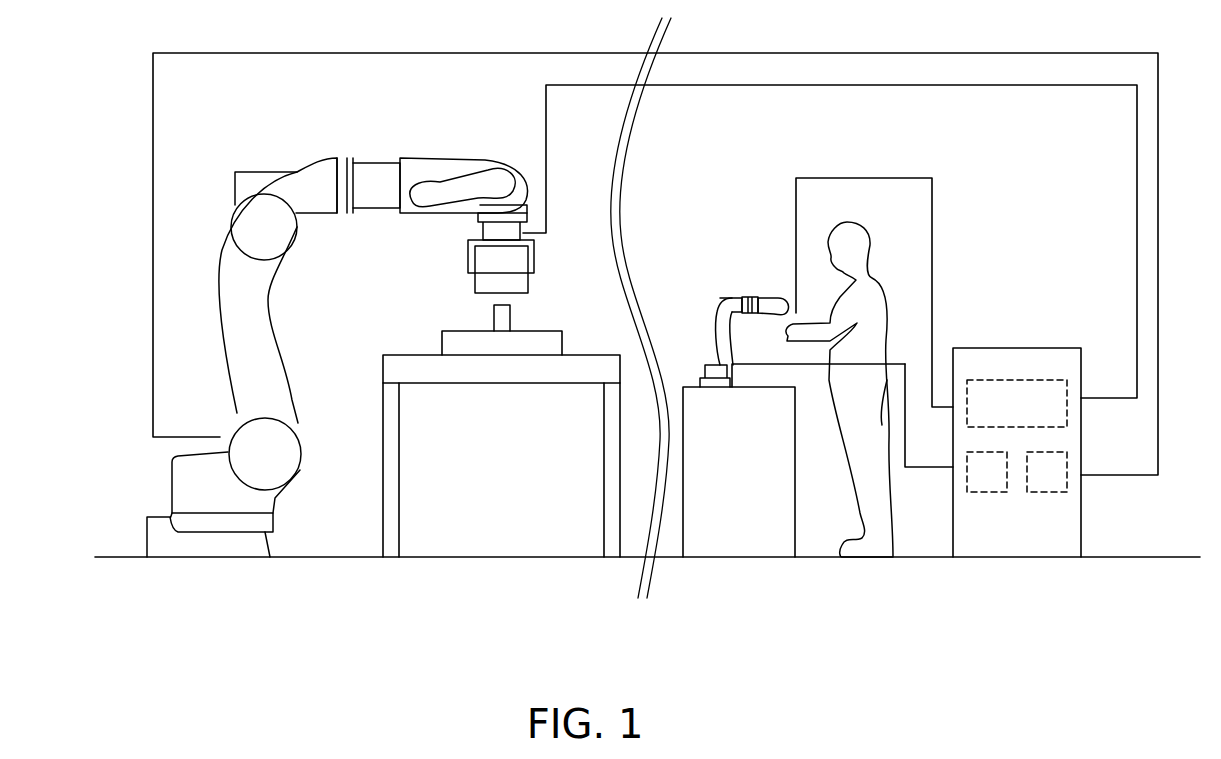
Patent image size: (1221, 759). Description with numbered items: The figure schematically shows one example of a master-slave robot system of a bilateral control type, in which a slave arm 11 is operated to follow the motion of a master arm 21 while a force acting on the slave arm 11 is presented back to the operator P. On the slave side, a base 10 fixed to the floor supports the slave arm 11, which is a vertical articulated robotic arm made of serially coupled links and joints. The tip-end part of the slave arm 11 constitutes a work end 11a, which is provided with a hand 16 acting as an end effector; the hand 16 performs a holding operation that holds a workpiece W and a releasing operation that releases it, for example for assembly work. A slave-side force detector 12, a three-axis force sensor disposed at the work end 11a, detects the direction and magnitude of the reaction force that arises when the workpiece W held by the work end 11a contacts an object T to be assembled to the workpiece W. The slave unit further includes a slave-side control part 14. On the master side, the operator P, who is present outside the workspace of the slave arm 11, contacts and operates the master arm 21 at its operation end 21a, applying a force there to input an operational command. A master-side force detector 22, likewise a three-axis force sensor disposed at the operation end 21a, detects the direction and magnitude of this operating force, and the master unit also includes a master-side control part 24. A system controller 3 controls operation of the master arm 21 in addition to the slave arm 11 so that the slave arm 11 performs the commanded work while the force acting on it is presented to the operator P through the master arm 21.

The base 10 is at (160, 540).
The slave arm 11 is at (321, 180).
The work end 11a is at (505, 182).
The slave-side force detector 12 is at (485, 229).
The hand 16 is at (535, 260).
The workpiece W is at (530, 279).
The object to be assembled T is at (494, 317).
The operator P is at (851, 222).
The master arm 21 is at (710, 336).
The master-side force detector 22 is at (748, 294).
The operation end 21a is at (778, 296).
The system controller 3 is at (1022, 395).
The master-side control part 24 is at (985, 493).
The slave-side control part 14 is at (1050, 493).